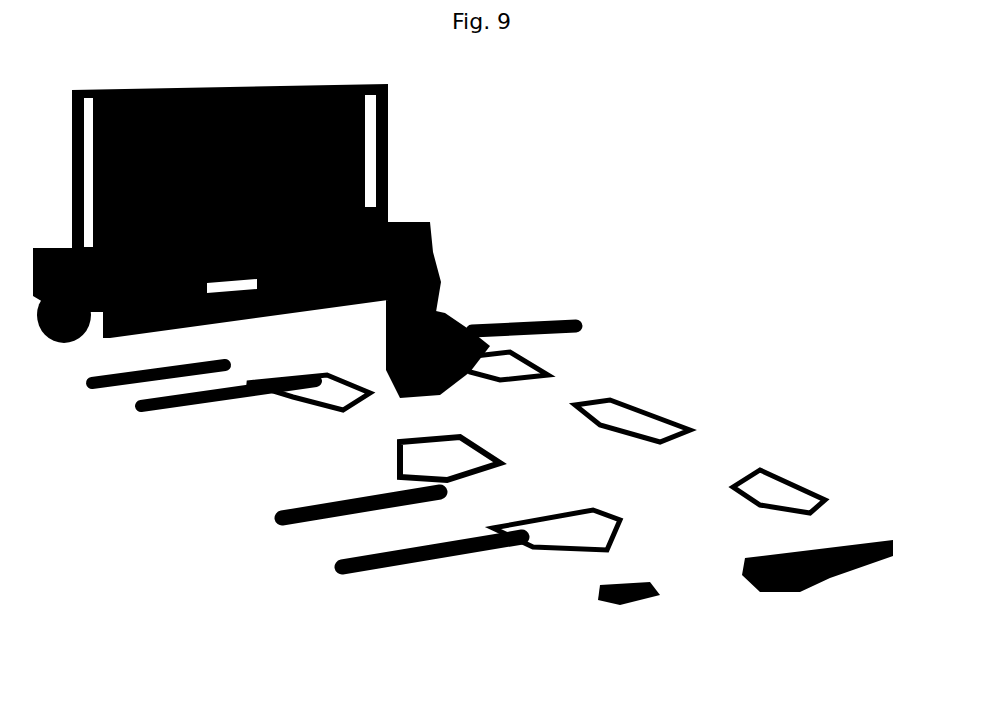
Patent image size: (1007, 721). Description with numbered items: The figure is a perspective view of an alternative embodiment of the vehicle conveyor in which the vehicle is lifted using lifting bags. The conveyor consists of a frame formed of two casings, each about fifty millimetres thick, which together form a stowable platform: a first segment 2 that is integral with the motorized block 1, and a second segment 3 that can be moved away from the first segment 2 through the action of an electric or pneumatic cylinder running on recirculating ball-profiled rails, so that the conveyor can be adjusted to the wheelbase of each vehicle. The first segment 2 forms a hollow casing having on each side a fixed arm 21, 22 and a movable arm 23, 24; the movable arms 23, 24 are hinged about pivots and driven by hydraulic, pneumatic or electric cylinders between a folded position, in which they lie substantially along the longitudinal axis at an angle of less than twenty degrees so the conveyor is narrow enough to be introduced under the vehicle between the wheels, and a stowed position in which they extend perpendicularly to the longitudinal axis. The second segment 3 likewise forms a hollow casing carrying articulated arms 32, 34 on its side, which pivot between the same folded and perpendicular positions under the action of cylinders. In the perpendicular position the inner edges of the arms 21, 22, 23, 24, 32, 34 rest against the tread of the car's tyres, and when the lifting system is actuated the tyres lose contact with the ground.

The motorized block 1 is at (237, 180).
The first segment 2 is at (406, 389).
The second segment 3 is at (648, 532).
The fixed arm 21 is at (622, 275).
The fixed arm 22 is at (134, 433).
The movable arm 23 is at (630, 324).
The movable arm 24 is at (203, 452).
The arm 32 is at (331, 562).
The arm 34 is at (419, 604).